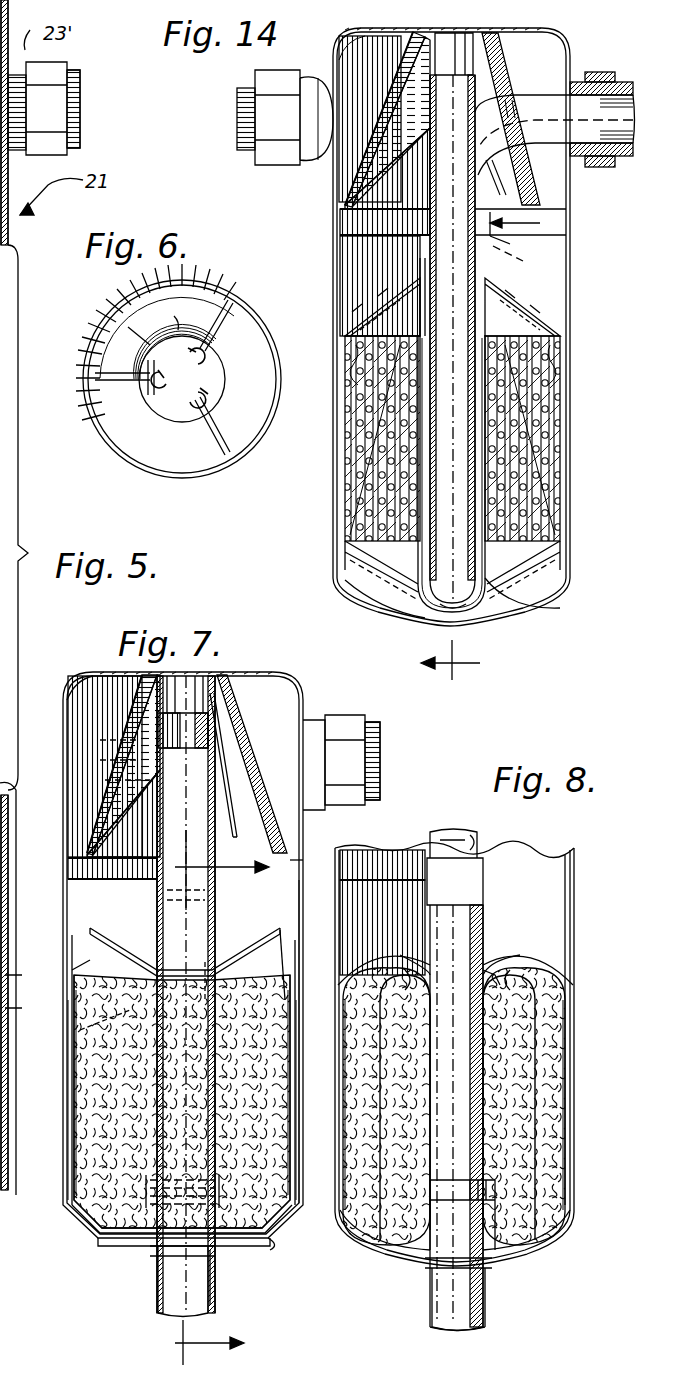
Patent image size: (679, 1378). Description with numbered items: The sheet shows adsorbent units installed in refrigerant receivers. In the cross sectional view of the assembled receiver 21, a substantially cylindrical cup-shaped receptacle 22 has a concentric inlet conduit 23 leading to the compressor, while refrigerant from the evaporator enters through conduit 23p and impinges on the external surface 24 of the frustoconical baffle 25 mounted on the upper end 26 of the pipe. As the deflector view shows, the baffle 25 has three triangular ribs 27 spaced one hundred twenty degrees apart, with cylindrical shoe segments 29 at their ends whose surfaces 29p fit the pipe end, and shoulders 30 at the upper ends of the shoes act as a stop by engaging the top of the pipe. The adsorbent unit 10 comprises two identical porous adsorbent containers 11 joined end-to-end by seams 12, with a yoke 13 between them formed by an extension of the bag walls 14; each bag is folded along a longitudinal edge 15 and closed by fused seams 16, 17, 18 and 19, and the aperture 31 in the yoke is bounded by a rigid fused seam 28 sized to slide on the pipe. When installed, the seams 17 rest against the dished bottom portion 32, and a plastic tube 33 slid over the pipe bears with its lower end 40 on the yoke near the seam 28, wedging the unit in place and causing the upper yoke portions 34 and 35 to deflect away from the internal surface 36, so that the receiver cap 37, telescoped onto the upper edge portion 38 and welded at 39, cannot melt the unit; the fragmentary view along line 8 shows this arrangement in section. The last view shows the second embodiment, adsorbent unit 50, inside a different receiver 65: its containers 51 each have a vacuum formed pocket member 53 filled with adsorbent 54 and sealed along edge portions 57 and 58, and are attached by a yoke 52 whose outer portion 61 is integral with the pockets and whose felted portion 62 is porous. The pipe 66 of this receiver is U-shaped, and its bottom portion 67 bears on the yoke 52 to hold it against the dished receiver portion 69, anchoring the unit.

In FIG. 7, the section line 8— 8 is at (214, 1092).
In FIG. 7, the adsorbent unit 10 is at (258, 930).
In FIG. 8, the adsorbent unit 10 is at (552, 965).
In FIG. 7, the adsorbent container 11 is at (80, 1162).
In FIG. 8, the adsorbent container 11 is at (543, 972).
In FIG. 7, the seam 12 is at (90, 933).
In FIG. 8, the seam 12 is at (452, 945).
In FIG. 7, the yoke 13 is at (87, 950).
In FIG. 8, the yoke 13 is at (485, 947).
In FIG. 7, the walls 14 is at (90, 1085).
In FIG. 8, the walls 14 is at (365, 1112).
In FIG. 14, the longitudinal edge 15 is at (492, 446).
In FIG. 7, the longitudinal edge 15 is at (70, 1112).
In FIG. 7, the fused seam 16 is at (85, 1240).
In FIG. 7, the fused seam 17 is at (143, 1255).
In FIG. 8, the fused seam 17 is at (400, 1267).
In FIG. 7, the fused seam 18 is at (267, 1238).
In FIG. 8, the fused seam 18 is at (365, 1262).
In FIG. 7, the fused seam 19 is at (47, 1005).
In FIG. 8, the fused seam 19 is at (353, 1065).
In FIG. 7, the refrigerant receiver 21 is at (55, 875).
In FIG. 8, the refrigerant receiver 21 is at (585, 858).
In FIG. 7, the cup-shaped receptacle 22 is at (70, 1132).
In FIG. 8, the cup-shaped receptacle 22 is at (575, 1135).
In FIG. 7, the inlet conduit 23 is at (187, 897).
In FIG. 8, the inlet conduit 23 is at (470, 840).
In FIG. 7, the conduit 23p is at (310, 705).
In FIG. 7, the external surface 24 is at (260, 770).
In FIG. 6, the frustoconical baffle 25 is at (110, 458).
In FIG. 7, the frustoconical baffle 25 is at (280, 682).
In FIG. 7, the upper end of pipe 26 is at (236, 714).
In FIG. 6, the triangular ribs 27 is at (225, 297).
In FIG. 7, the triangular ribs 27 is at (190, 740).
In FIG. 7, the fused seam 28 is at (183, 925).
In FIG. 8, the fused seam 28 is at (507, 965).
In FIG. 6, the cylindrical shoe segments 29 is at (137, 405).
In FIG. 7, the cylindrical shoe segments 29 is at (120, 672).
In FIG. 6, the surfaces 29p is at (170, 285).
In FIG. 7, the surfaces 29p is at (105, 740).
In FIG. 6, the shoulders 30 is at (192, 380).
In FIG. 7, the shoulders 30 is at (178, 672).
In FIG. 7, the aperture 31 is at (204, 942).
In FIG. 8, the aperture 31 is at (445, 970).
In FIG. 7, the dished bottom portion 32 is at (225, 1261).
In FIG. 8, the dished bottom portion 32 is at (500, 1268).
In FIG. 7, the plastic tube 33 is at (298, 825).
In FIG. 8, the plastic tube 33 is at (488, 860).
In FIG. 7, the upper yoke portion 34 is at (294, 975).
In FIG. 7, the upper yoke portion 35 is at (80, 940).
In FIG. 7, the internal surface 36 is at (297, 950).
In FIG. 7, the receiver cap 37 is at (70, 675).
In FIG. 7, the upper edge portion 38 is at (302, 870).
In FIG. 8, the upper edge portion 38 is at (532, 850).
In FIG. 7, the weld 39 is at (300, 883).
In FIG. 8, the weld 39 is at (578, 890).
In FIG. 7, the lower end of tube 40 is at (280, 982).
In FIG. 8, the lower end of tube 40 is at (522, 947).
In FIG. 14, the adsorbent unit 50 is at (537, 289).
In FIG. 14, the adsorbent containers 51 is at (398, 297).
In FIG. 14, the yoke 52 is at (517, 610).
In FIG. 14, the pocket member 53 is at (360, 468).
In FIG. 14, the adsorbent 54 is at (550, 391).
In FIG. 14, the edge portion 57 is at (373, 270).
In FIG. 14, the edge portion 58 is at (380, 405).
In FIG. 14, the outer yoke portion 61 is at (420, 610).
In FIG. 14, the porous felted sheet portion 62 is at (495, 613).
In FIG. 14, the receiver unit 65 is at (303, 245).
In FIG. 14, the U-shaped pipe 66 is at (410, 437).
In FIG. 14, the bottom portion of U 67 is at (454, 620).
In FIG. 14, the dished receiver portion 69 is at (357, 622).